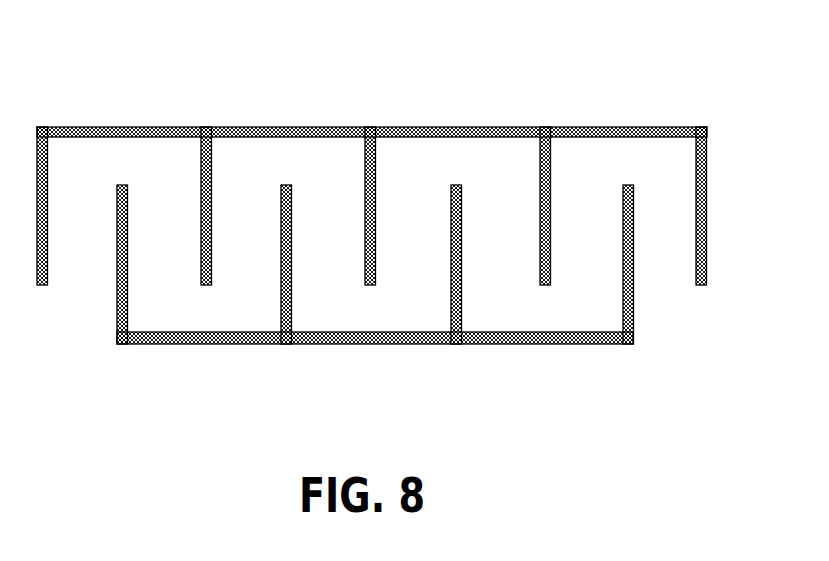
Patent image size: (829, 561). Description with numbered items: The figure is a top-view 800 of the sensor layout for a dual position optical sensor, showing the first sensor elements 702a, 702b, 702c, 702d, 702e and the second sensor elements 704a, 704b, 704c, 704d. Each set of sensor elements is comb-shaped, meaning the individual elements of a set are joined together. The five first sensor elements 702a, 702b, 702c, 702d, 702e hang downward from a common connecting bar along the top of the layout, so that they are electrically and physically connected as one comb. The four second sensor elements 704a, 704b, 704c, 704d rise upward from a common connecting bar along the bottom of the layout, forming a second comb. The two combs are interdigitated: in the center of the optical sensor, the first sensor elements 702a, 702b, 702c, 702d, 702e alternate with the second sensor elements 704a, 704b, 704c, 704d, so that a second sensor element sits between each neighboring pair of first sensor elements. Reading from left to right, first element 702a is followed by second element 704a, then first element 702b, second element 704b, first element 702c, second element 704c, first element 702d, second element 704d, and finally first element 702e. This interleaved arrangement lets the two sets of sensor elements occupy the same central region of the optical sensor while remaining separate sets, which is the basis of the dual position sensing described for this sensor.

The top-view 800 is at (402, 34).
The first sensor element 702a is at (51, 272).
The first sensor element 702b is at (215, 272).
The first sensor element 702c is at (379, 272).
The first sensor element 702d is at (554, 272).
The first sensor element 702e is at (710, 272).
The second sensor element 704a is at (116, 207).
The second sensor element 704b is at (280, 207).
The second sensor element 704c is at (450, 207).
The second sensor element 704d is at (622, 207).